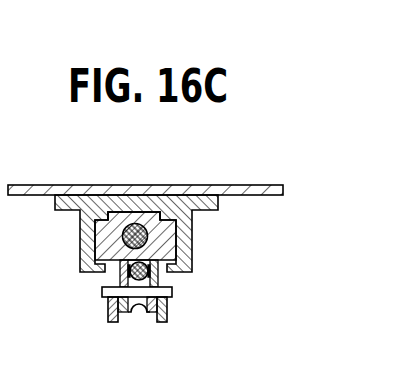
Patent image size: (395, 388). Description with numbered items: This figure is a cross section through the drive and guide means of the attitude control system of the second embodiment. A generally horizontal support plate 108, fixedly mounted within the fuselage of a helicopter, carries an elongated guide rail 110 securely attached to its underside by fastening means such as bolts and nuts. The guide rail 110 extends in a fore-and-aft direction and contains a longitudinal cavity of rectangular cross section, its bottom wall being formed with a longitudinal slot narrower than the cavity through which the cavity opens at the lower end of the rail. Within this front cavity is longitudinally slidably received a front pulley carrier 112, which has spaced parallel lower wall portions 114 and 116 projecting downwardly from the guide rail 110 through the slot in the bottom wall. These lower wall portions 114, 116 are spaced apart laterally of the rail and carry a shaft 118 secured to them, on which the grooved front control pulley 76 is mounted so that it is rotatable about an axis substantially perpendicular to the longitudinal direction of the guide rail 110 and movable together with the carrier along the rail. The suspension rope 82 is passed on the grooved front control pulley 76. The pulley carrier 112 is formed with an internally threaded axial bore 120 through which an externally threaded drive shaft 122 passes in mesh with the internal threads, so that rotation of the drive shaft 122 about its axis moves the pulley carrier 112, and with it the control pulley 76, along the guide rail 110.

The support plate 108 is at (268, 189).
The guide rail 110 is at (192, 243).
The front pulley carrier 112 is at (95, 243).
The internally threaded axial bore 120 is at (124, 226).
The drive shaft 122 is at (146, 224).
The suspension rope 82 is at (163, 278).
The shaft 118 is at (102, 291).
The lower wall portion 114 is at (111, 314).
The lower wall portion 116 is at (166, 312).
The front control pulley 76 is at (131, 313).